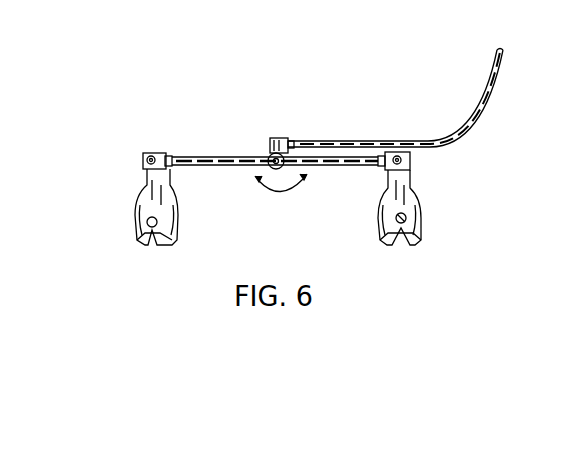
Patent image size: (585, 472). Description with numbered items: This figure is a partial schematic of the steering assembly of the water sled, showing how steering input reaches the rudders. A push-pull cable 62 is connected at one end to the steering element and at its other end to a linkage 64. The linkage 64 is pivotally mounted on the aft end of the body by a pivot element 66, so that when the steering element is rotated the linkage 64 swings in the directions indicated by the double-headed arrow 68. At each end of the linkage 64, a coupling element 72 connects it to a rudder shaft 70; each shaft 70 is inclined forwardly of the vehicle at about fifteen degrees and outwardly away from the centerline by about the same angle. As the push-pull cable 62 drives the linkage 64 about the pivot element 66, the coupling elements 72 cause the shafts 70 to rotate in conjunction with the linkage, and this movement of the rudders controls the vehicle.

The push-pull cable 62 is at (500, 93).
The linkage 64 is at (220, 157).
The pivot element 66 is at (273, 138).
The double-headed arrow 68 is at (280, 193).
The shaft 70 is at (418, 237).
The coupling element 72 is at (140, 228).